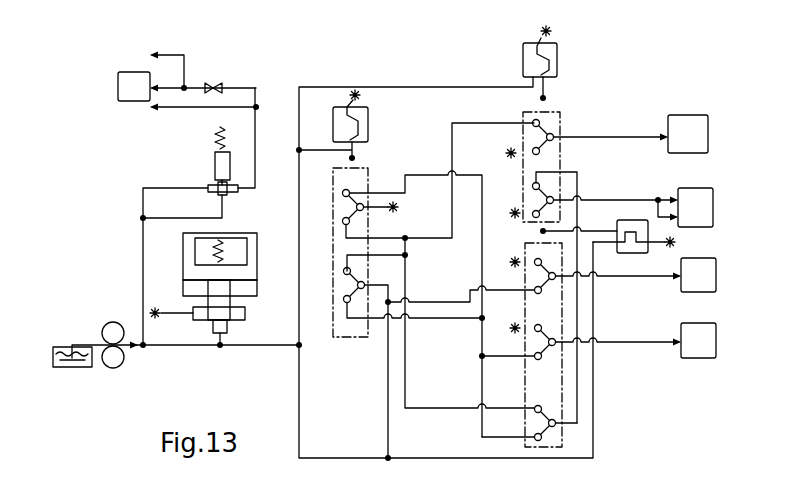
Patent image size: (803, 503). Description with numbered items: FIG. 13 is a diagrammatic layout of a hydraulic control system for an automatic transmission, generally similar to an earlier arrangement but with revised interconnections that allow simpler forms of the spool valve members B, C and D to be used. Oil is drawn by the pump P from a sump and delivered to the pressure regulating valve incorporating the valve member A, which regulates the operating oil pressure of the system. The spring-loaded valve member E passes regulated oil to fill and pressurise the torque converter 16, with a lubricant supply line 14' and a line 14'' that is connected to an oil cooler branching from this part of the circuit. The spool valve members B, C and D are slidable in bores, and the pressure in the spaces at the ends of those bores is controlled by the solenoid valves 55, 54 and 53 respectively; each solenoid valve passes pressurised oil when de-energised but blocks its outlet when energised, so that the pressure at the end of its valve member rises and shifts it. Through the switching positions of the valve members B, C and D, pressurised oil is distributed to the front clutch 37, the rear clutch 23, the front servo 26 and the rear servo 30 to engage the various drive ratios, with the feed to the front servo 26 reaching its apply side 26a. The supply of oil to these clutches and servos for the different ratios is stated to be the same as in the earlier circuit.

The oil cooler line 14'' is at (187, 62).
The lubricant supply line 14' is at (204, 116).
The torque converter 16 is at (143, 97).
The solenoid valve 55 is at (368, 126).
The solenoid valve 54 is at (523, 63).
The rear servo 30 is at (697, 145).
The rear clutch 23 is at (698, 196).
The front servo 26 is at (693, 197).
The solenoid valve 53 is at (635, 258).
The front clutch 37 is at (698, 275).
The front servo apply side 26a is at (698, 340).
The pressure regulating valve member A is at (172, 262).
The spool valve member B is at (352, 352).
The spool valve member C is at (582, 155).
The spool valve member D is at (616, 390).
The spool valve member E is at (204, 165).
The pump P is at (114, 366).